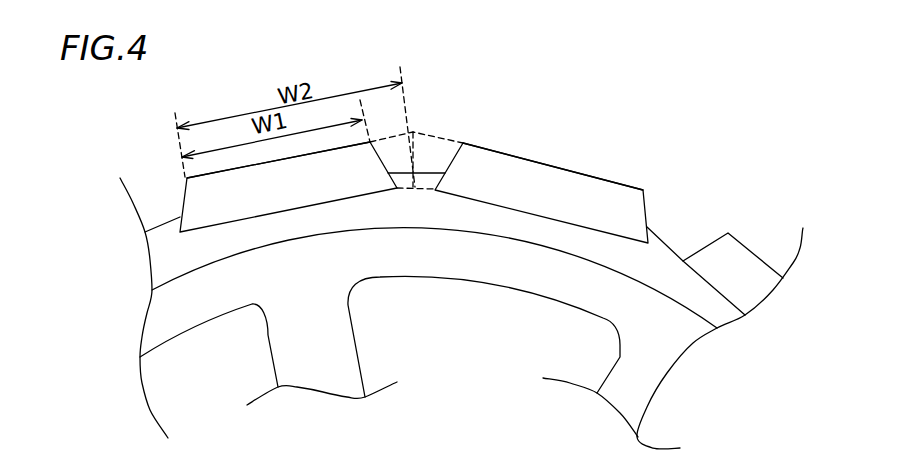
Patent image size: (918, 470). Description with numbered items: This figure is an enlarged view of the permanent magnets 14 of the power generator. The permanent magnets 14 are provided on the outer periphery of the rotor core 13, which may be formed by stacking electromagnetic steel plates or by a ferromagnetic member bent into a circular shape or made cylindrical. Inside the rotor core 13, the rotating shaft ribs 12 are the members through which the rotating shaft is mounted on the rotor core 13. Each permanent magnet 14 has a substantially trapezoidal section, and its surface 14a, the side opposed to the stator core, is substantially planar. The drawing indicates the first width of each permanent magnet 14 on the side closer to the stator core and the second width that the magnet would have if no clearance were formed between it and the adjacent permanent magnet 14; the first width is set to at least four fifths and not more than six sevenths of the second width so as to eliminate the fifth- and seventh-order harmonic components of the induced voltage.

The rotating shaft ribs 12 is at (467, 260).
The rotor core 13 is at (502, 223).
The permanent magnet 14 is at (213, 204).
The surface 14a is at (237, 171).